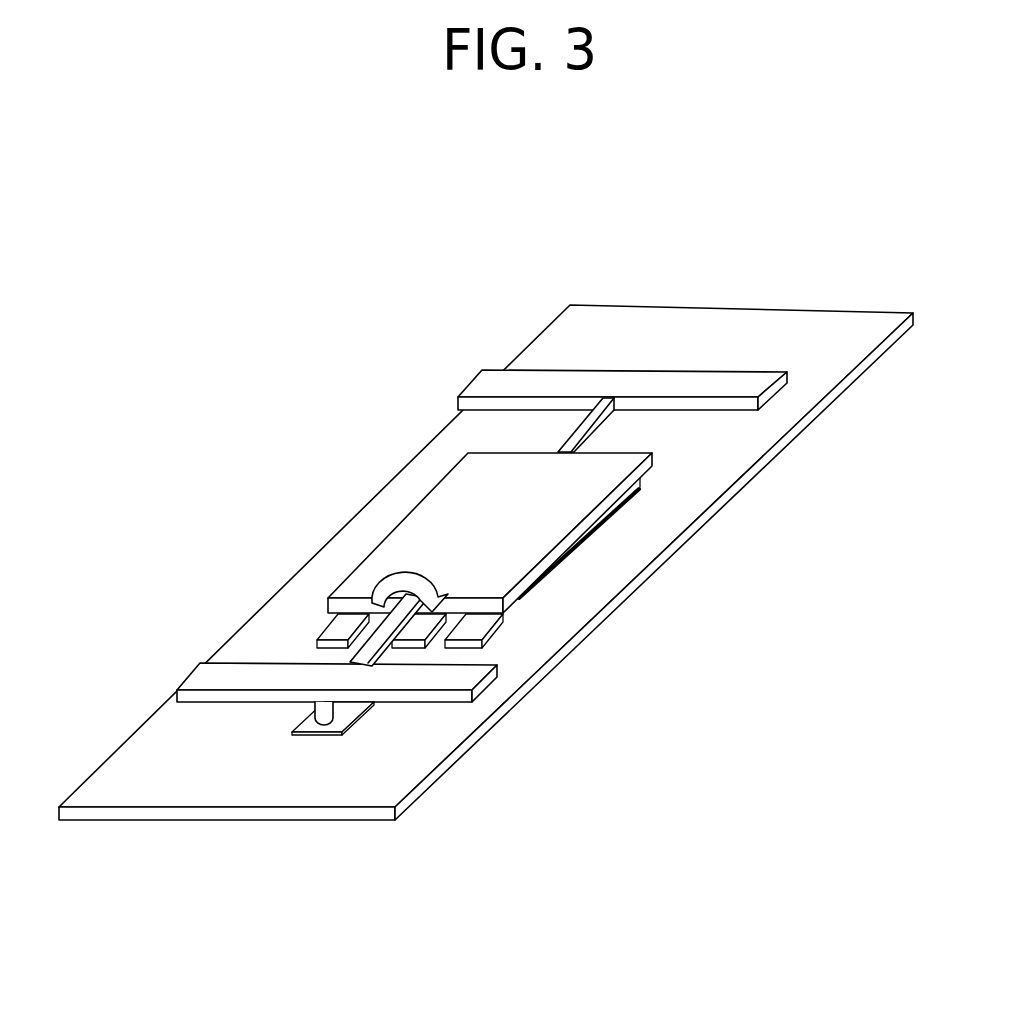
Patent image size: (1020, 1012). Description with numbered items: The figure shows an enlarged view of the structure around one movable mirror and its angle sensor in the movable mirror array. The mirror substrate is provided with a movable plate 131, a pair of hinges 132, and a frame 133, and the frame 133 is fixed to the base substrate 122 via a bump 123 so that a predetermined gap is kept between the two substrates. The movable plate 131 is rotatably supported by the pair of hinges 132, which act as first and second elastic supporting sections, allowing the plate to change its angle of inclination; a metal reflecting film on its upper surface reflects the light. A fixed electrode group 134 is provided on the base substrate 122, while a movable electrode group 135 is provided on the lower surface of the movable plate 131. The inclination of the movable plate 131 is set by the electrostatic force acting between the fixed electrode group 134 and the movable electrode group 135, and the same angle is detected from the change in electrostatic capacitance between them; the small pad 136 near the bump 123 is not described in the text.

The base substrate 122 is at (148, 762).
The bump 123 is at (325, 713).
The movable plate 131 is at (547, 520).
The hinge 132 is at (573, 432).
The frame 133 is at (497, 387).
The fixed electrode group 134 is at (514, 651).
The movable electrode group 135 is at (515, 590).
The conductive pad 136 is at (352, 728).